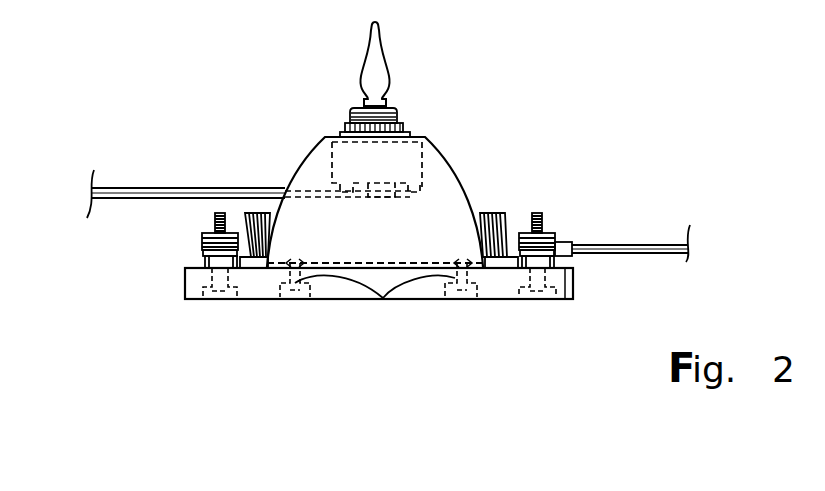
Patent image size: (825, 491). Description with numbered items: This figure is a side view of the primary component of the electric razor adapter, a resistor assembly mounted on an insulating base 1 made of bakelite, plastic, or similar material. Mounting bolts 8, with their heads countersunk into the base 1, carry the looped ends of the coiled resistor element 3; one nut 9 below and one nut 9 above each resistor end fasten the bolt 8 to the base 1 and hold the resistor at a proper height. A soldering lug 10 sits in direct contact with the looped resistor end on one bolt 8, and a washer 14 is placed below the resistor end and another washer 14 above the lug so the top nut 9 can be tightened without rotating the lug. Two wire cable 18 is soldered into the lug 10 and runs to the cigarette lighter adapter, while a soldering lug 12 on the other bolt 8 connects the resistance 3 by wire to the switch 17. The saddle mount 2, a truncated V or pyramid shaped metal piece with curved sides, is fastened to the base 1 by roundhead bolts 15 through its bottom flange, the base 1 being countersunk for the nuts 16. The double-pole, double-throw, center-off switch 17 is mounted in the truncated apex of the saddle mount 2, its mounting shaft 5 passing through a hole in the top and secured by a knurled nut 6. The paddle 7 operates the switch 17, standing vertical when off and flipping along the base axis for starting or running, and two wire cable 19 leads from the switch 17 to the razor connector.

The base 1 is at (252, 300).
The saddle mount 2 is at (300, 170).
The resistor element 3 is at (493, 215).
The mounting shaft 5 is at (348, 117).
The knurled nut 6 is at (407, 128).
The paddle 7 is at (370, 32).
The mounting bolt 8 is at (213, 220).
The nut 9 is at (203, 237).
The soldering lug 10 is at (562, 242).
The soldering lug 12 is at (203, 253).
The washer 14 is at (203, 247).
The roundhead bolt 15 is at (383, 288).
The nut 16 is at (298, 300).
The switch 17 is at (425, 163).
The two wire cable 18 is at (643, 242).
The two wire cable 19 is at (173, 190).